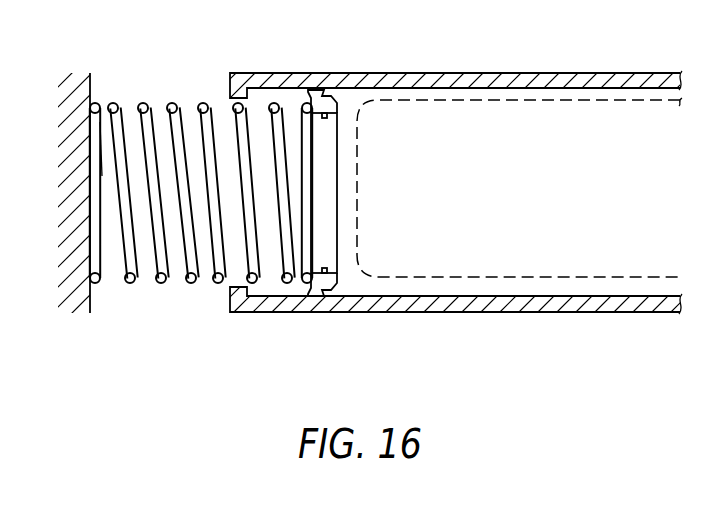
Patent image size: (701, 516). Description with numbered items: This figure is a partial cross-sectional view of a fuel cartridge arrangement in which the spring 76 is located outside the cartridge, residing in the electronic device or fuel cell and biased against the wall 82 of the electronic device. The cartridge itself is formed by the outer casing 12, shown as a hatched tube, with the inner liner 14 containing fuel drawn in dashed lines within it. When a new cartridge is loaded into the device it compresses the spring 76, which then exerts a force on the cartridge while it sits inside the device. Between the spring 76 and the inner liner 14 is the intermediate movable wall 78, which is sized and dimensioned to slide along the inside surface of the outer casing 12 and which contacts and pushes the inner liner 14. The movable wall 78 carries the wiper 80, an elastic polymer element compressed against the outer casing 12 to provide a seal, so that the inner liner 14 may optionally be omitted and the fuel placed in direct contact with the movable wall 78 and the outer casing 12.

The outer casing 12 is at (482, 86).
The inner liner 14 is at (562, 118).
The spring 76 is at (213, 260).
The intermediate movable wall 78 is at (327, 253).
The wiper 80 is at (321, 293).
The wall of the electronic device 82 is at (77, 273).